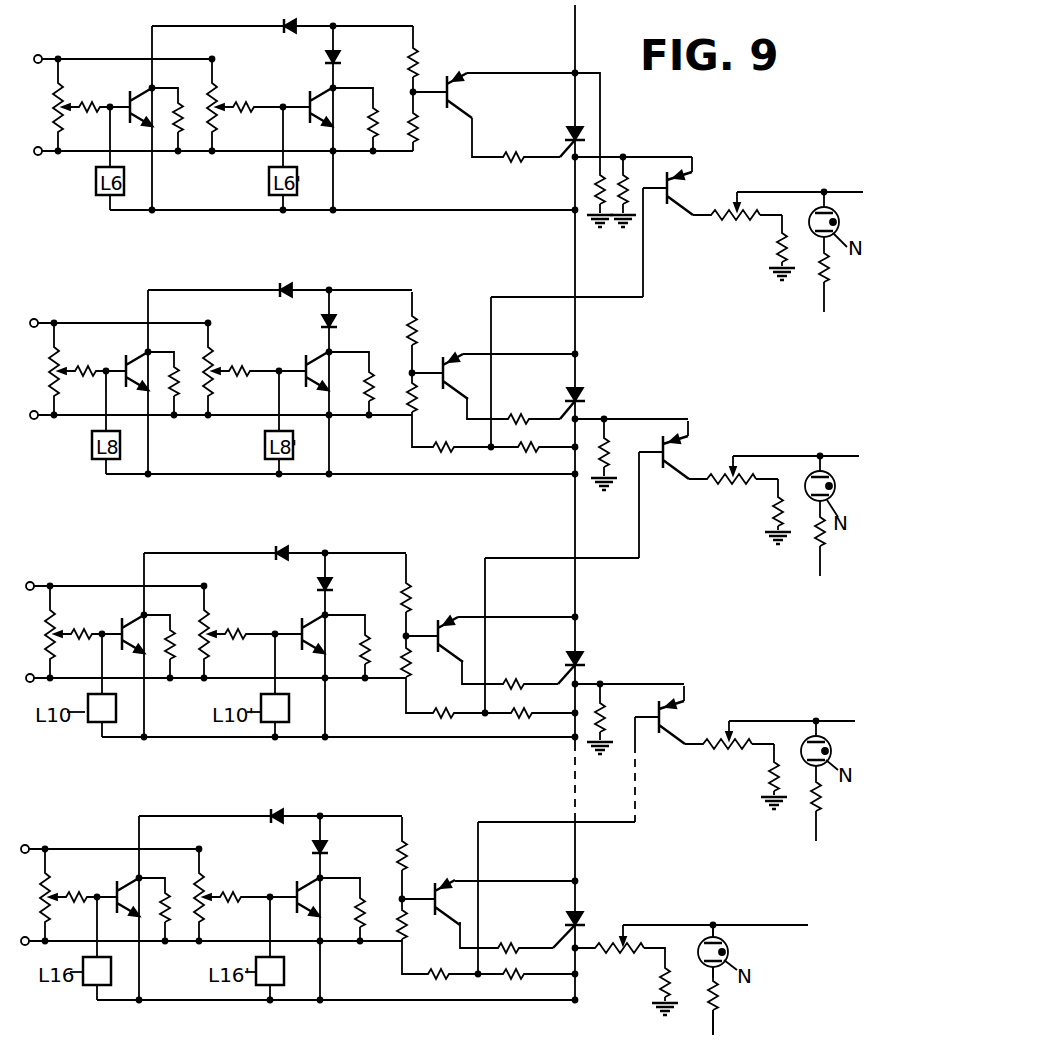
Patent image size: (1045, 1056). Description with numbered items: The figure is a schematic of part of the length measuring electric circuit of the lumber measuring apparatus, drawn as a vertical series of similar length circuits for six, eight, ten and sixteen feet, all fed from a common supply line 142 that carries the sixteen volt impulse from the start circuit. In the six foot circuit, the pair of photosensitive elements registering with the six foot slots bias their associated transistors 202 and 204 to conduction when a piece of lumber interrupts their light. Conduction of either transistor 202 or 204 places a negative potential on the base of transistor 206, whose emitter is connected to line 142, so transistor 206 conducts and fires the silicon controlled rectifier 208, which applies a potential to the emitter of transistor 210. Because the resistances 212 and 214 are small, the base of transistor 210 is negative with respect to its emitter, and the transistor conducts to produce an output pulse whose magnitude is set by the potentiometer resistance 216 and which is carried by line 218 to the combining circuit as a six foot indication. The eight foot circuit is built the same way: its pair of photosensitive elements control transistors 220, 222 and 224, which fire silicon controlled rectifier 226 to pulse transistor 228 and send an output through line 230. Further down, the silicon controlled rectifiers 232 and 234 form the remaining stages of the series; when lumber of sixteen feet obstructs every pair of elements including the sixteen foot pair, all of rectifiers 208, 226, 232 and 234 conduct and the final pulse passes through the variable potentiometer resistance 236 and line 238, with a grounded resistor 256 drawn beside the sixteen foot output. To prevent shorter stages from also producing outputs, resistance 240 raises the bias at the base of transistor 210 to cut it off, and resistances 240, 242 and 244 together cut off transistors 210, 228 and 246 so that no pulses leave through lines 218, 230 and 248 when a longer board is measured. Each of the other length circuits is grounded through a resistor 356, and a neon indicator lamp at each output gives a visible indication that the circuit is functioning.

The line 142 is at (573, 37).
The transistor 202 is at (127, 102).
The transistor 204 is at (306, 102).
The transistor 206 is at (446, 82).
The silicon controlled rectifier 208 is at (568, 136).
The transistor 210 is at (666, 205).
The resistance 212 is at (629, 210).
The resistance 214 is at (527, 450).
The potentiometer resistance 216 is at (732, 227).
The line 218 is at (848, 192).
The transistor 220 is at (114, 362).
The transistor 222 is at (290, 363).
The transistor 224 is at (442, 366).
The silicon controlled rectifier 226 is at (583, 396).
The transistor 228 is at (664, 463).
The line 230 is at (796, 502).
The silicon controlled rectifier 232 is at (580, 657).
The silicon controlled rectifier 234 is at (583, 912).
The variable potentiometer resistance 236 is at (612, 955).
The line 238 is at (790, 924).
The resistance 240 is at (440, 450).
The resistance 242 is at (437, 716).
The resistance 244 is at (425, 976).
The transistor 246 is at (660, 728).
The line 248 is at (792, 768).
The resistor 256 is at (664, 979).
The resistors 356 is at (778, 241).